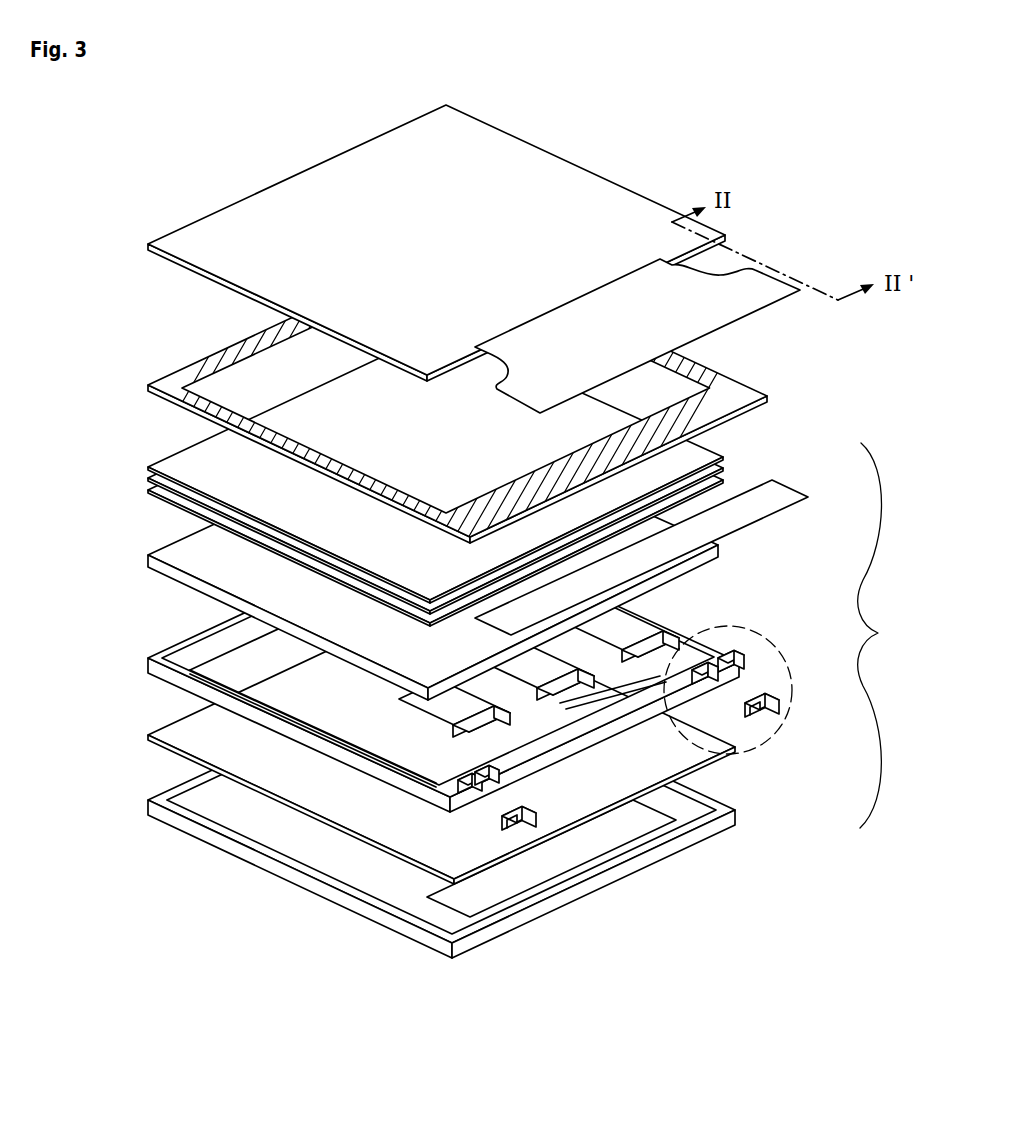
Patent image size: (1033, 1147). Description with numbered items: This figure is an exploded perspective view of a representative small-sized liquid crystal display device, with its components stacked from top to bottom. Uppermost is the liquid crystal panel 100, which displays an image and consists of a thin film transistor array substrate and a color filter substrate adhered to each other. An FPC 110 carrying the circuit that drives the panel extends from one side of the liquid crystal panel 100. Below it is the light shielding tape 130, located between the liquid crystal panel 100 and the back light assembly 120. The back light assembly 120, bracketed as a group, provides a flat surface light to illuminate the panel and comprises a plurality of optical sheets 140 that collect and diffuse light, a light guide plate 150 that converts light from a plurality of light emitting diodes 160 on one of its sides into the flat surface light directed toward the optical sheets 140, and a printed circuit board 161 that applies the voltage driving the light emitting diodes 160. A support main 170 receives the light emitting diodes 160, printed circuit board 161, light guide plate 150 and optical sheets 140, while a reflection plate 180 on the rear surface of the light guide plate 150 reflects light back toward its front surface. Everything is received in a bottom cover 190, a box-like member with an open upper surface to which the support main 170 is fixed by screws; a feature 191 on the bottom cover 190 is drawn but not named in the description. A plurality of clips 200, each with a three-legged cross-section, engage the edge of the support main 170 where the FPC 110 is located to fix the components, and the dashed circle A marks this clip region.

The liquid crystal panel 100 is at (436, 243).
The FPC 110 is at (651, 336).
The back light assembly 120 is at (885, 635).
The light shielding tape 130 is at (461, 395).
The optical sheets 140 is at (476, 477).
The light guide plate 150 is at (476, 560).
The light emitting diodes 160 is at (443, 667).
The printed circuit board 161 is at (662, 541).
The support main 170 is at (632, 700).
The reflection plate 180 is at (477, 743).
The bottom cover 190 is at (460, 813).
The opening 191 is at (559, 858).
The clips 200 is at (672, 759).
The region A is at (737, 690).